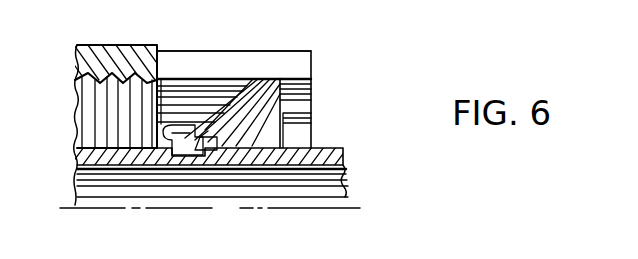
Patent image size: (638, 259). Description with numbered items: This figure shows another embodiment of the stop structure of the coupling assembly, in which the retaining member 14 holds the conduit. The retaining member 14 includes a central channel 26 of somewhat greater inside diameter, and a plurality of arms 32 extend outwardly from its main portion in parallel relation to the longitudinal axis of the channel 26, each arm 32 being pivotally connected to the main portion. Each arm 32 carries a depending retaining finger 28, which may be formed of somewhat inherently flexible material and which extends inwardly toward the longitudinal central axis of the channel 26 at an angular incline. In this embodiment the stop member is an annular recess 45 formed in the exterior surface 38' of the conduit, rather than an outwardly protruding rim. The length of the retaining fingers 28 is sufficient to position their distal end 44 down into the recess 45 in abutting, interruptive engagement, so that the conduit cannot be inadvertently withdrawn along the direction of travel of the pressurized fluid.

The retaining member 14 is at (309, 37).
The central channel 26 is at (306, 90).
The retaining finger 28 is at (272, 117).
The arm 32 is at (260, 49).
The exterior surface of the conduit 38' is at (229, 140).
The distal end of the retaining finger 44 is at (174, 126).
The annular recess 45 is at (201, 137).